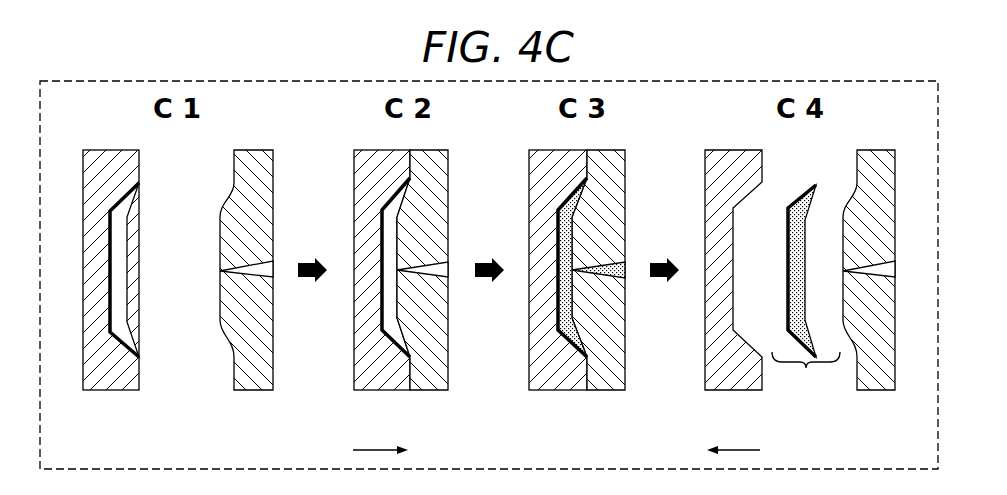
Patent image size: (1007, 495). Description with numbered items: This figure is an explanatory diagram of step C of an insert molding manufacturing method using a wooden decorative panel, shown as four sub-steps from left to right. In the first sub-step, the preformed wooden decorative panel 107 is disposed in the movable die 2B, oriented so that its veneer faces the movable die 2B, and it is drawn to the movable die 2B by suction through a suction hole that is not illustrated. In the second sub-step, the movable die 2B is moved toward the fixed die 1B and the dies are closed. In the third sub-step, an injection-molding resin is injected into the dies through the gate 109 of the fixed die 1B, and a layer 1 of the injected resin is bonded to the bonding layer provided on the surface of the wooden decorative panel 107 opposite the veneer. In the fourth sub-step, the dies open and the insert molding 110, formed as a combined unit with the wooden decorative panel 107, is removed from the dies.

The wooden decorative panel 107 is at (141, 186).
The gate 109 is at (275, 268).
The layer of injection-molding resin 1 is at (568, 298).
The insert molding 110 is at (806, 368).
The movable die 2B is at (108, 379).
The fixed die 1B is at (256, 379).